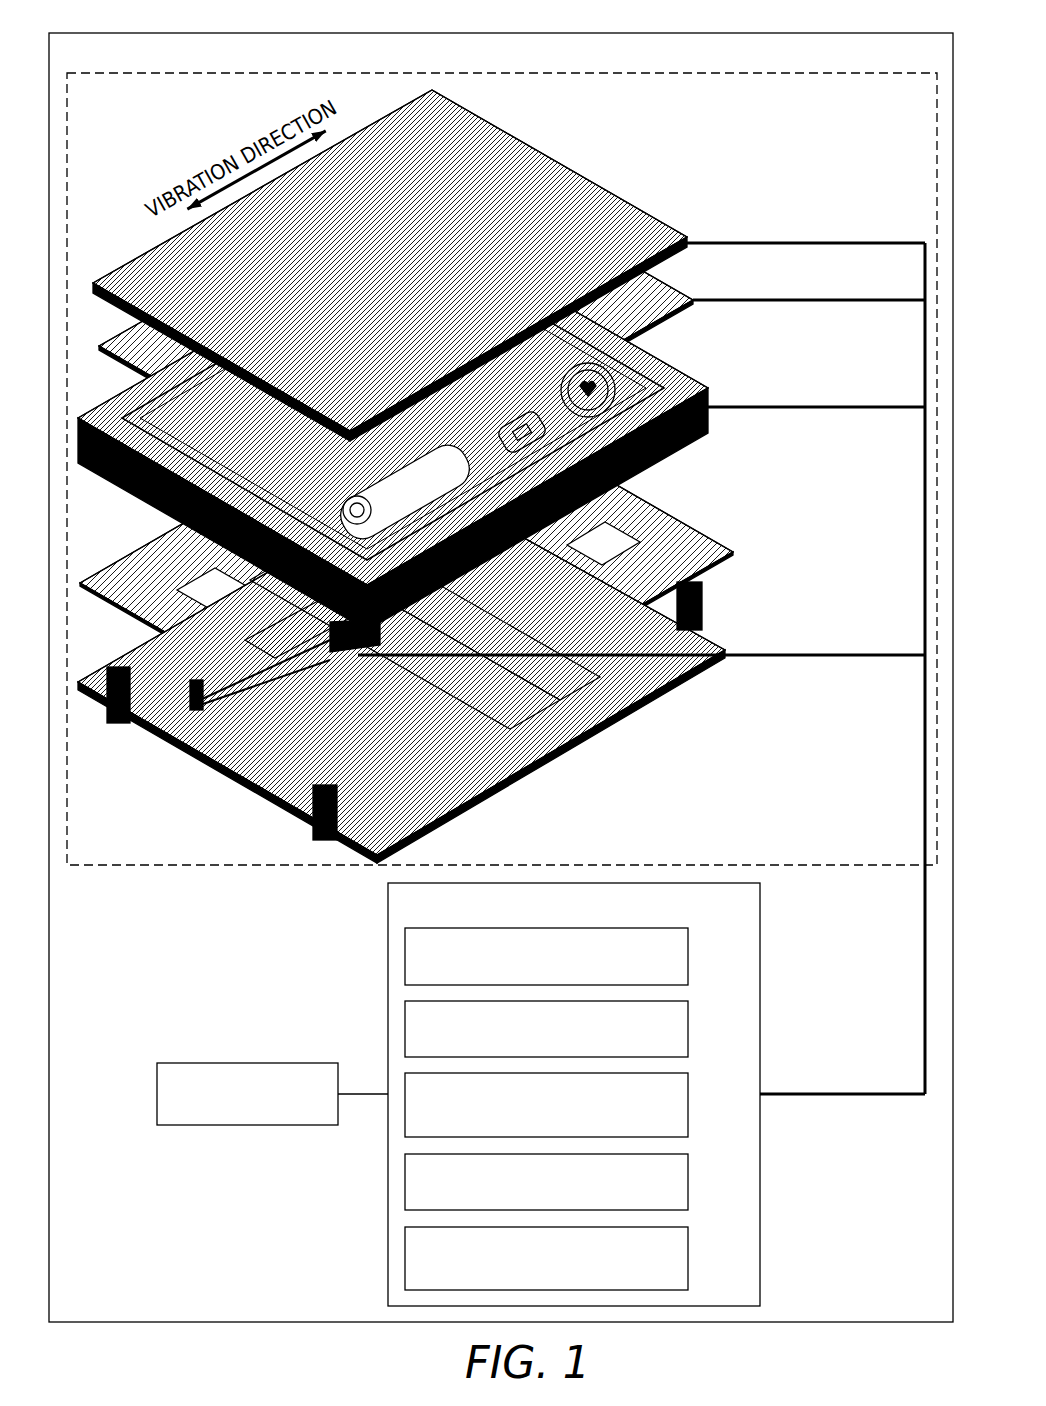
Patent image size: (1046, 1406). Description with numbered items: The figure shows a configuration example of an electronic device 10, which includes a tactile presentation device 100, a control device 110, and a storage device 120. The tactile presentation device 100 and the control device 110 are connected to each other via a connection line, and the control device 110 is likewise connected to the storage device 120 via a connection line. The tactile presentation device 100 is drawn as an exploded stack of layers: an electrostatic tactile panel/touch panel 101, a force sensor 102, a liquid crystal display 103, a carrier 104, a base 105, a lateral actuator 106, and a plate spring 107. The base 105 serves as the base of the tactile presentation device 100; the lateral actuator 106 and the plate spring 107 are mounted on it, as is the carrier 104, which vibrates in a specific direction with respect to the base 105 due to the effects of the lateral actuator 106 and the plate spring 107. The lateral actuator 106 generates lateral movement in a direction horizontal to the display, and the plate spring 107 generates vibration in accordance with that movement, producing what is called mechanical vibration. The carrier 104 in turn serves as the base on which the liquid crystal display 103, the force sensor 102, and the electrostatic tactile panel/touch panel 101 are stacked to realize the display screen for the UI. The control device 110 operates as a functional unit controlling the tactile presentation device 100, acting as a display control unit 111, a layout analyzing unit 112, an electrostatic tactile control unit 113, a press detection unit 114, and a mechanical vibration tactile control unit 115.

The electronic device 10 is at (508, 28).
The tactile presentation device 100 is at (778, 70).
The electrostatic tactile panel/touch panel 101 is at (597, 185).
The force sensor 102 is at (672, 283).
The liquid crystal display 103 is at (682, 365).
The carrier 104 is at (680, 512).
The base 105 is at (730, 648).
The lateral actuator 106 is at (358, 655).
The plate spring 107 is at (705, 590).
The control device 110 is at (762, 912).
The display control unit 111 is at (690, 962).
The layout analyzing unit 112 is at (690, 1034).
The electrostatic tactile control unit 113 is at (690, 1106).
The press detection unit 114 is at (690, 1186).
The mechanical vibration tactile control unit 115 is at (690, 1264).
The storage device 120 is at (256, 1058).